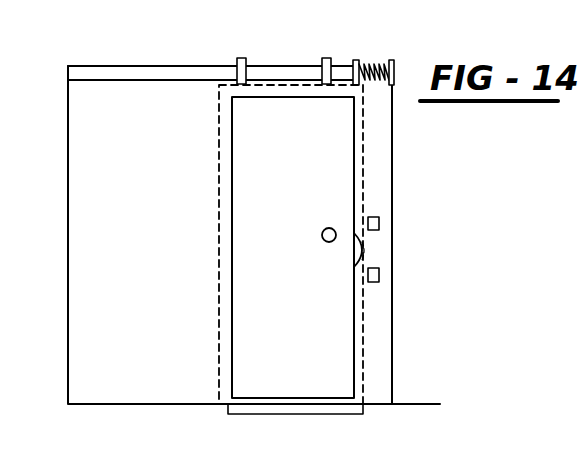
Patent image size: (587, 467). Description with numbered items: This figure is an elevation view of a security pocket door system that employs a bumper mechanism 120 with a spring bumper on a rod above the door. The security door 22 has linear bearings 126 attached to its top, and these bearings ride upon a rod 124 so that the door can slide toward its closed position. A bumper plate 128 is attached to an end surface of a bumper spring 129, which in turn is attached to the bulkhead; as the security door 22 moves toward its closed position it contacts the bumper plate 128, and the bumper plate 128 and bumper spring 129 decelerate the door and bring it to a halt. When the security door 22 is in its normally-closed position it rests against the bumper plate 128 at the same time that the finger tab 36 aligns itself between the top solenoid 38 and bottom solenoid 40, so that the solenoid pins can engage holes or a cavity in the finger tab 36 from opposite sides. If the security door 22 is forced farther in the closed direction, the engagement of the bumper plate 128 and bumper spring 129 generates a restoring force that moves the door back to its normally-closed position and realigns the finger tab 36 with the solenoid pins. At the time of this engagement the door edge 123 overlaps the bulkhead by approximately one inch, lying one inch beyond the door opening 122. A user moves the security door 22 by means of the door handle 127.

The security door 22 is at (275, 160).
The finger tab 36 is at (364, 253).
The top solenoid 38 is at (380, 222).
The bottom solenoid 40 is at (380, 275).
The bumper mechanism 120 is at (403, 45).
The door opening 122 is at (353, 322).
The door edge 123 is at (218, 208).
The rod 124 is at (190, 66).
The linear bearings 126 is at (244, 58).
The door handle 127 is at (328, 228).
The bumper plate 128 is at (354, 58).
The bumper spring 129 is at (396, 62).